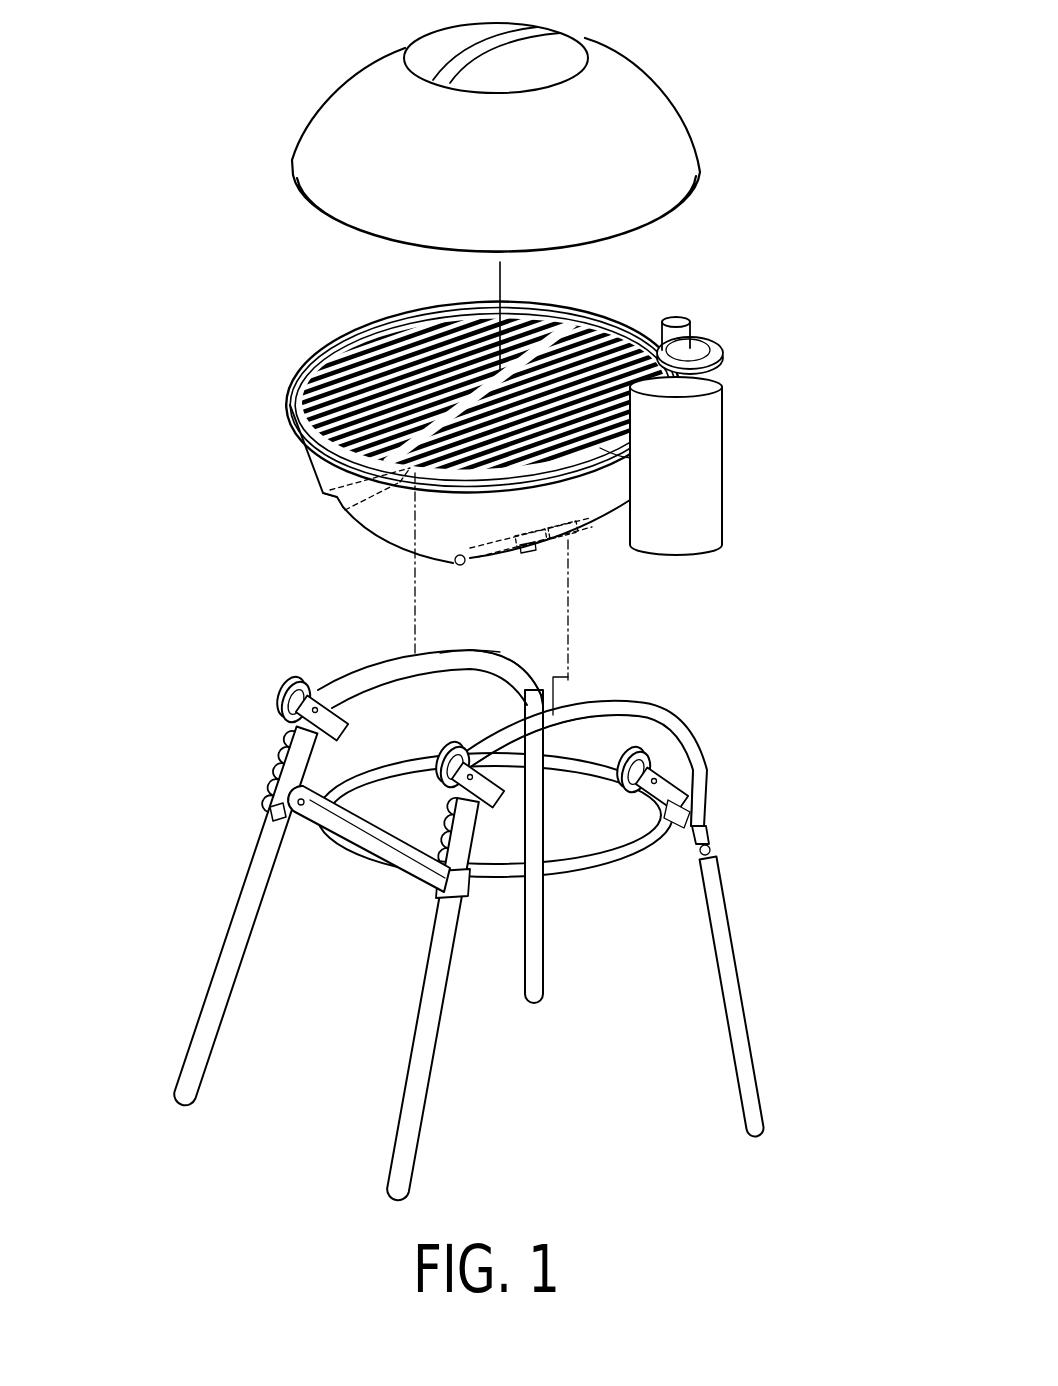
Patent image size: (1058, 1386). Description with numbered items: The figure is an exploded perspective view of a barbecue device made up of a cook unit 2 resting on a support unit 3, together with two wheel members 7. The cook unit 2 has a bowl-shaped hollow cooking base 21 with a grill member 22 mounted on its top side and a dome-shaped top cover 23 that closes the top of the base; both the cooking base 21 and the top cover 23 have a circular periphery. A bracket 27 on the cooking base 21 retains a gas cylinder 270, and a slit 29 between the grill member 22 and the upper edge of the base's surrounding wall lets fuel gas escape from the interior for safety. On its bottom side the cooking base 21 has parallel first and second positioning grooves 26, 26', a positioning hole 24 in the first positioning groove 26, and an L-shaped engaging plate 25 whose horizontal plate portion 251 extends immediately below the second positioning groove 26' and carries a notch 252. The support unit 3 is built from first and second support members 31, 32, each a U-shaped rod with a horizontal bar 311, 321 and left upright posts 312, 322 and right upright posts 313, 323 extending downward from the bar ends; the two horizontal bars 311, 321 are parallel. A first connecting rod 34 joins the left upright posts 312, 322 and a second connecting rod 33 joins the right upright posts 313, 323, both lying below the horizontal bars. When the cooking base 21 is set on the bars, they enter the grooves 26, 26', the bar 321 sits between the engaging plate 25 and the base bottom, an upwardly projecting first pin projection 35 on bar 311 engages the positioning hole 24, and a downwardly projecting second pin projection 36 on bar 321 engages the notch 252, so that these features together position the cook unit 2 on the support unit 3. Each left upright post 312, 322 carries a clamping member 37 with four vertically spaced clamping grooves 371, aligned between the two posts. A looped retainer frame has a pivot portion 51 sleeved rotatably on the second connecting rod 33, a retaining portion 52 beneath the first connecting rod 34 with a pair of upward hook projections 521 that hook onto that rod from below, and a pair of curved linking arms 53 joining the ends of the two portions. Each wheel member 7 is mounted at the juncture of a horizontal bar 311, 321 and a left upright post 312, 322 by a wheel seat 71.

The cook unit 2 is at (730, 137).
The support unit 3 is at (726, 775).
The wheel member 7 is at (280, 692).
The cooking base 21 is at (308, 471).
The grill member 22 is at (357, 377).
The top cover 23 is at (670, 110).
The positioning hole 24 is at (356, 530).
The engaging plate 25 is at (529, 566).
The first positioning groove 26 is at (276, 522).
The second positioning groove 26' is at (412, 579).
The bracket 27 is at (724, 347).
The slit 29 is at (632, 458).
The first support member 31 is at (342, 684).
The second support member 32 is at (714, 804).
The second connecting rod 33 is at (693, 832).
The first connecting rod 34 is at (372, 818).
The first pin projection 35 is at (412, 660).
The second pin projection 36 is at (582, 758).
The clamping member 37 is at (258, 817).
The pivot portion 51 is at (592, 730).
The retaining portion 52 is at (347, 845).
The curved linking arm 53 is at (488, 745).
The wheel seat 71 is at (342, 722).
The horizontal plate portion 251 is at (593, 530).
The notch 252 is at (563, 548).
The gas cylinder 270 is at (724, 457).
The horizontal bar 311 is at (450, 660).
The left upright post 312 is at (300, 768).
The right upright post 313 is at (528, 550).
The horizontal bar 321 is at (603, 705).
The left upright post 322 is at (472, 858).
The right upright post 323 is at (696, 766).
The clamping groove 371 is at (275, 760).
The hook projection 521 is at (300, 813).